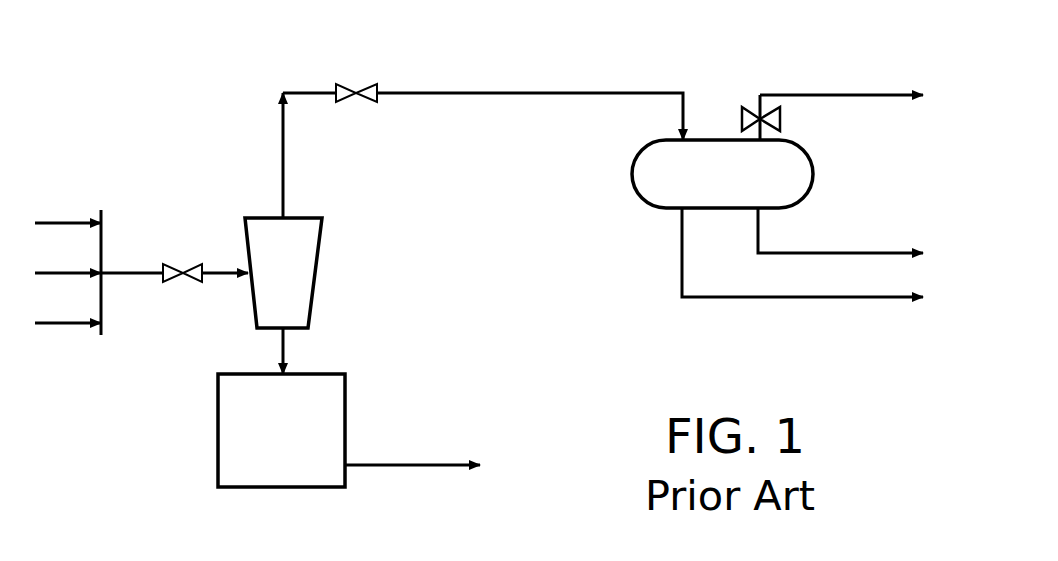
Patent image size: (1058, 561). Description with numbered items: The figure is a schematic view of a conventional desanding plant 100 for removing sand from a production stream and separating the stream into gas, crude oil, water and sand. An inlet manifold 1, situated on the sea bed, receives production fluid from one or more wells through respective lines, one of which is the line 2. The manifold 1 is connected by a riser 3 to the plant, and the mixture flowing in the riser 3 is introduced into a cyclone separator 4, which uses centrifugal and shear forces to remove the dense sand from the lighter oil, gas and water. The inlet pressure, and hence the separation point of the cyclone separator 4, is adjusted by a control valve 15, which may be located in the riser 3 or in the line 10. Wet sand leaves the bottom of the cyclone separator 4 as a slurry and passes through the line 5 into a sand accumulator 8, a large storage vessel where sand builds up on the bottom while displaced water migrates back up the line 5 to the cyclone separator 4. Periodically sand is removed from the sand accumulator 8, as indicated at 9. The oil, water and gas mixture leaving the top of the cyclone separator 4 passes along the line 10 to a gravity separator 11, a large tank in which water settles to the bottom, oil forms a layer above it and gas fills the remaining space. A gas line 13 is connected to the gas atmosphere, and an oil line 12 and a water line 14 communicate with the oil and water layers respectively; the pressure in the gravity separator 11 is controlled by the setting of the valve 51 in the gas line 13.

The desanding plant 100 is at (622, 60).
The inlet manifold 1 is at (105, 226).
The line 2 is at (60, 221).
The riser 3 is at (125, 276).
The control valve 15 is at (183, 257).
The cyclone separator 4 is at (322, 247).
The line 5 is at (285, 356).
The sand accumulator 8 is at (218, 388).
The sand removal 9 is at (410, 468).
The line 10 is at (485, 92).
The gravity separator 11 is at (632, 172).
The valve 51 is at (782, 118).
The gas line 13 is at (789, 91).
The oil line 12 is at (821, 250).
The water line 14 is at (705, 300).